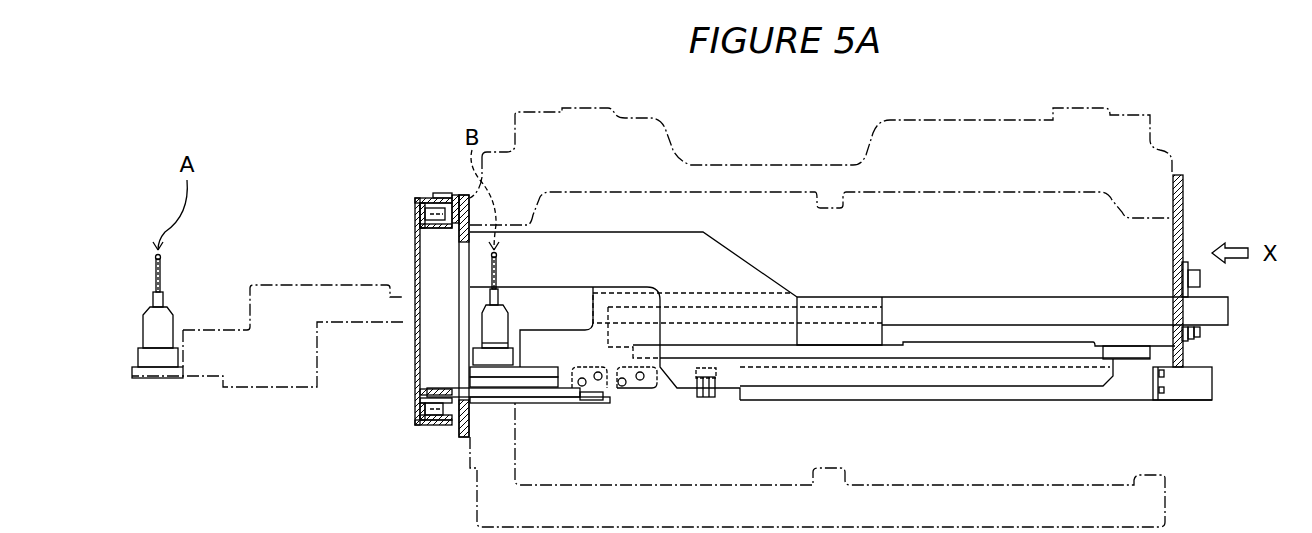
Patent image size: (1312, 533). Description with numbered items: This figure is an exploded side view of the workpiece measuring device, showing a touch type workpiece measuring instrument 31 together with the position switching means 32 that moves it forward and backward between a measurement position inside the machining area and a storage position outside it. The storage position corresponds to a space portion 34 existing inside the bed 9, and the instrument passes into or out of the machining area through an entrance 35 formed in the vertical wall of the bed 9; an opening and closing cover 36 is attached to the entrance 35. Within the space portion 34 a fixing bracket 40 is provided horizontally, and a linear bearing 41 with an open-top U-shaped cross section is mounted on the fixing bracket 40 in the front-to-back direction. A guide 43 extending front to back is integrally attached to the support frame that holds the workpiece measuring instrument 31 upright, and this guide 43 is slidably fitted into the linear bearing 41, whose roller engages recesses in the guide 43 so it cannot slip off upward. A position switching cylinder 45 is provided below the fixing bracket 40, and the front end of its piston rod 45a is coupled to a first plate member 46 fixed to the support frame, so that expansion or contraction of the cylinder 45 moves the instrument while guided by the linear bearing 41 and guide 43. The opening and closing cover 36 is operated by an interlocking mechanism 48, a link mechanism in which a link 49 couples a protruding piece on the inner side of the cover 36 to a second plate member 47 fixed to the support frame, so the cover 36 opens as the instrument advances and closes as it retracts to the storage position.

The bed 9 is at (982, 116).
The space portion 34 is at (936, 239).
The entrance 35 is at (442, 261).
The opening and closing cover 36 is at (455, 400).
The workpiece measuring instrument 31 is at (475, 347).
The guide 43 is at (1036, 312).
The linear bearing 41 is at (834, 310).
The fixing bracket 40 is at (1100, 352).
The position switching cylinder 45 is at (1043, 403).
The piston rod 45a is at (734, 400).
The first plate member 46 is at (655, 395).
The second plate member 47 is at (597, 400).
The link 49 is at (542, 400).
The interlocking mechanism 48 is at (505, 412).
The position switching means 32 is at (758, 409).